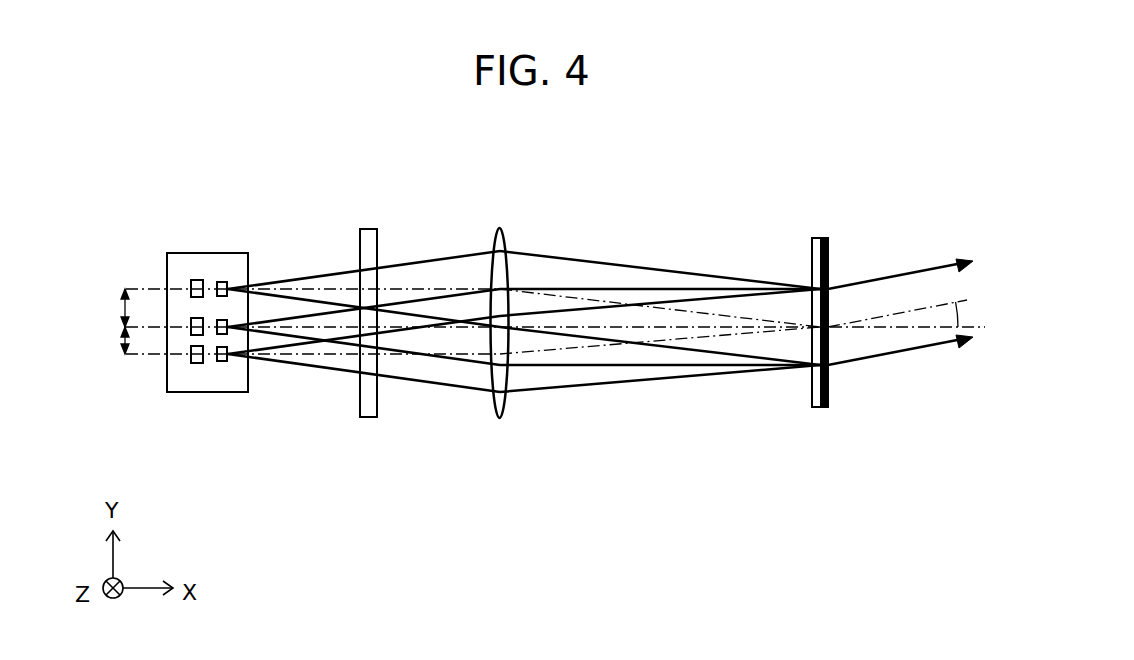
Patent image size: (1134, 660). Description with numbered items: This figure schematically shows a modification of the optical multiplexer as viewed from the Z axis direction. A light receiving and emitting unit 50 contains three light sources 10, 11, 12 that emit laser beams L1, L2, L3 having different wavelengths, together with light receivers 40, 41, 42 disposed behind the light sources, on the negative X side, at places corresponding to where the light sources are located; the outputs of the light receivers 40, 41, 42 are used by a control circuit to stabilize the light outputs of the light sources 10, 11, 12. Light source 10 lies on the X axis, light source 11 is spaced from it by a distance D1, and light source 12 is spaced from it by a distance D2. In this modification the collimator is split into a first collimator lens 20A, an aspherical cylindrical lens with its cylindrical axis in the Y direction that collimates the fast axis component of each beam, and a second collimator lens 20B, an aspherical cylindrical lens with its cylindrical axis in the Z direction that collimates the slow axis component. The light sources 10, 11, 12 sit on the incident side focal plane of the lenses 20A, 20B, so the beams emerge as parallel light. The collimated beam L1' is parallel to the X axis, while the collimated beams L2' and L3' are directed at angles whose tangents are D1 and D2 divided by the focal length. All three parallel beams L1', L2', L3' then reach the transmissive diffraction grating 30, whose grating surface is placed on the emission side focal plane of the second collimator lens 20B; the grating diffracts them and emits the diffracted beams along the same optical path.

The light source housing 50 is at (181, 253).
The light receiver 41 is at (193, 281).
The light receiver 40 is at (193, 334).
The light receiver 42 is at (193, 362).
The light source 11 is at (222, 281).
The light source 10 is at (220, 335).
The light source 12 is at (222, 362).
The first collimator lens 20A is at (368, 229).
The second collimator lens 20B is at (497, 237).
The transmissive diffraction grating 30 is at (823, 238).
The laser beam L1 is at (364, 369).
The laser beam L2 is at (364, 266).
The laser beam L3 is at (364, 394).
The collimated laser beam L1' is at (660, 368).
The collimated laser beam L2' is at (660, 289).
The collimated laser beam L3' is at (660, 381).
The distance between light source 10 and light source 11 D1 is at (104, 308).
The distance between light source 10 and light source 12 D2 is at (104, 342).